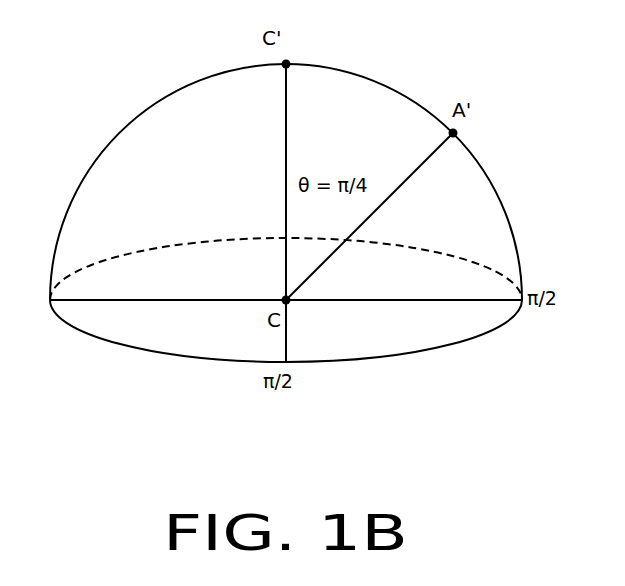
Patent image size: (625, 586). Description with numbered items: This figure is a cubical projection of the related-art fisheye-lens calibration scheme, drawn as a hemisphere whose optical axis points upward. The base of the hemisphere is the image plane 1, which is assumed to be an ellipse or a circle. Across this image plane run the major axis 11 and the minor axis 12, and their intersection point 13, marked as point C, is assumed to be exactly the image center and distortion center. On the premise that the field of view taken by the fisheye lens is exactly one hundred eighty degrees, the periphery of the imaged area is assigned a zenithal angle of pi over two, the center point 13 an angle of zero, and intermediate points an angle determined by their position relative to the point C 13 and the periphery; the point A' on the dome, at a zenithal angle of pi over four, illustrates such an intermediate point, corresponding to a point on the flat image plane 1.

The image plane 1 is at (388, 340).
The major axis 11 is at (440, 300).
The minor axis 12 is at (286, 340).
The intersection point 13 is at (285, 300).